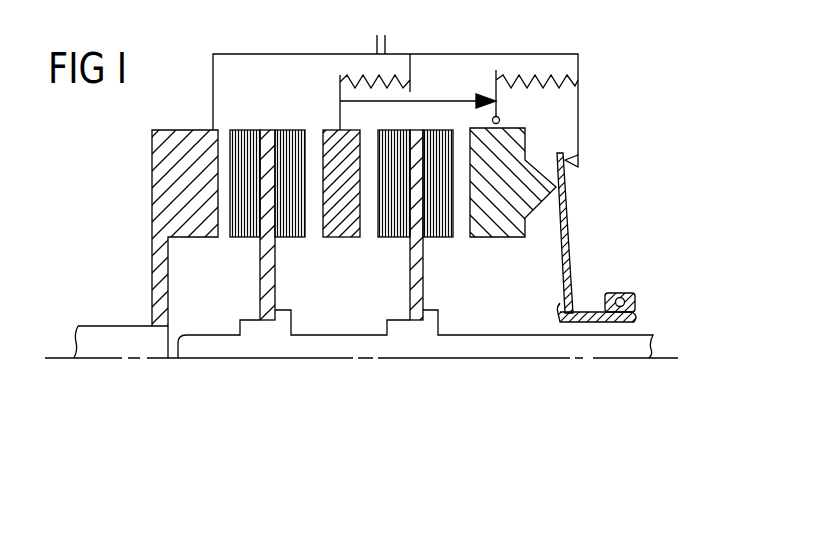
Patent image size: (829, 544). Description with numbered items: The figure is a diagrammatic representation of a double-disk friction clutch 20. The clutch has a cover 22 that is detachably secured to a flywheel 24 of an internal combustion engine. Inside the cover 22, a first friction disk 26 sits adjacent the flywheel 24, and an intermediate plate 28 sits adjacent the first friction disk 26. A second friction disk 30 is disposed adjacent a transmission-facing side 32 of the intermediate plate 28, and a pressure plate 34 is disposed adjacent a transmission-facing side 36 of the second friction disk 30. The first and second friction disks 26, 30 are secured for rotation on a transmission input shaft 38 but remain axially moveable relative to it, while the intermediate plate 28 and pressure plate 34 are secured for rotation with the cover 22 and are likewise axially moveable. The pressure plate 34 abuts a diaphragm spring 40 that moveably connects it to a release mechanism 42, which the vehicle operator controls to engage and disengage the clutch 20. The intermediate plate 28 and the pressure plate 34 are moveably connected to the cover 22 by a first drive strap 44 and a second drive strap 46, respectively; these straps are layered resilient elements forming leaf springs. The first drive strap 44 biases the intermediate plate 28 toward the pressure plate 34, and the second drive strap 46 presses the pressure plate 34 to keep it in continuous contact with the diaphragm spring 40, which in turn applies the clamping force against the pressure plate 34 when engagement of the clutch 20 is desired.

The double-disk friction clutch 20 is at (122, 122).
The cover 22 is at (578, 120).
The flywheel 24 is at (158, 186).
The first friction disk 26 is at (275, 250).
The intermediate plate 28 is at (324, 122).
The second friction disk 30 is at (425, 258).
The transmission-facing side 32 is at (360, 238).
The pressure plate 34 is at (497, 238).
The transmission-facing side 36 is at (455, 136).
The transmission input shaft 38 is at (515, 347).
The diaphragm spring 40 is at (574, 226).
The release mechanism 42 is at (650, 284).
The first drive strap 44 is at (370, 80).
The second drive strap 46 is at (556, 78).